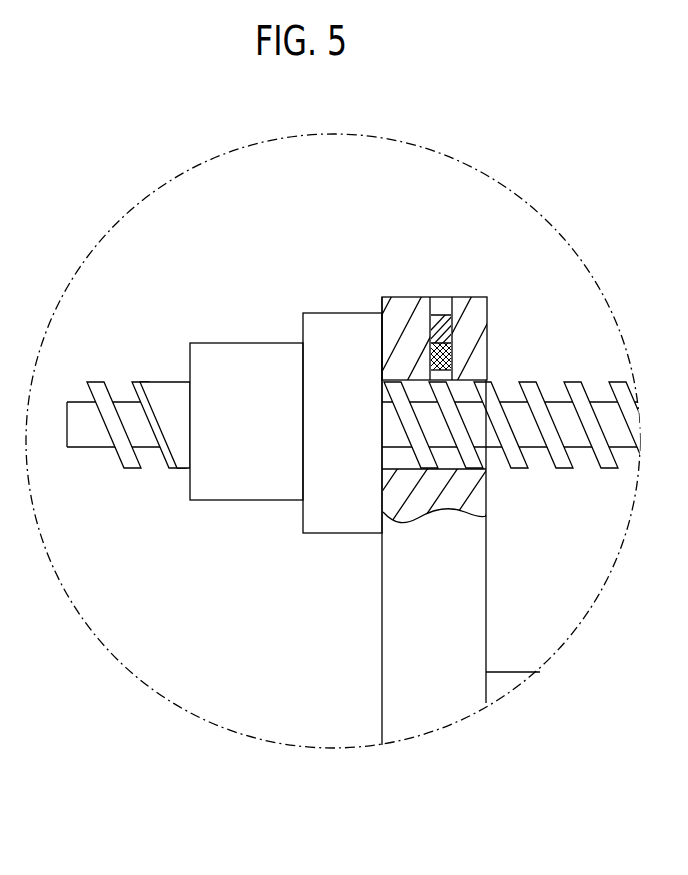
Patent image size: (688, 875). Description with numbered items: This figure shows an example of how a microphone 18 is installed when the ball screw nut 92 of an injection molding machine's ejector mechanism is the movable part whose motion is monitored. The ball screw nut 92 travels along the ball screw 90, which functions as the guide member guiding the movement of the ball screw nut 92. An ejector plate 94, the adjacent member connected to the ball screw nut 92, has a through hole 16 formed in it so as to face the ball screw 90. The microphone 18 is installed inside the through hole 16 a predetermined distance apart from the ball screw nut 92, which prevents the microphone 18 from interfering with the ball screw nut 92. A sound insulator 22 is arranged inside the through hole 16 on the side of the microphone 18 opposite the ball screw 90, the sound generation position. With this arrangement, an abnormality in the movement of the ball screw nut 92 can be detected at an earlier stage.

The through hole 16 is at (453, 373).
The microphone 18 is at (436, 355).
The sound insulator 22 is at (437, 322).
The ball screw 90 is at (565, 466).
The ball screw nut 92 is at (236, 358).
The ejector plate 94 is at (463, 572).